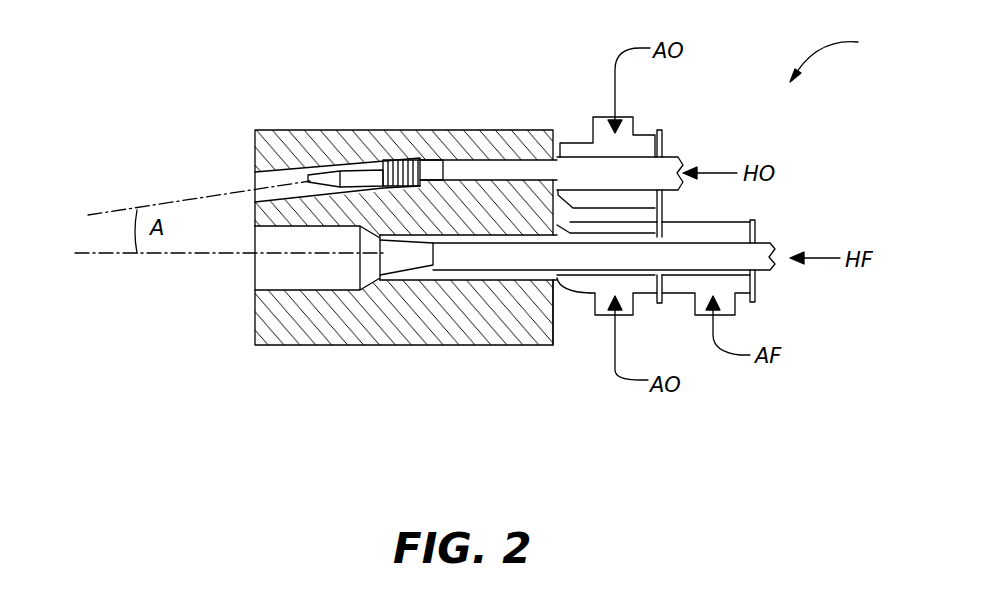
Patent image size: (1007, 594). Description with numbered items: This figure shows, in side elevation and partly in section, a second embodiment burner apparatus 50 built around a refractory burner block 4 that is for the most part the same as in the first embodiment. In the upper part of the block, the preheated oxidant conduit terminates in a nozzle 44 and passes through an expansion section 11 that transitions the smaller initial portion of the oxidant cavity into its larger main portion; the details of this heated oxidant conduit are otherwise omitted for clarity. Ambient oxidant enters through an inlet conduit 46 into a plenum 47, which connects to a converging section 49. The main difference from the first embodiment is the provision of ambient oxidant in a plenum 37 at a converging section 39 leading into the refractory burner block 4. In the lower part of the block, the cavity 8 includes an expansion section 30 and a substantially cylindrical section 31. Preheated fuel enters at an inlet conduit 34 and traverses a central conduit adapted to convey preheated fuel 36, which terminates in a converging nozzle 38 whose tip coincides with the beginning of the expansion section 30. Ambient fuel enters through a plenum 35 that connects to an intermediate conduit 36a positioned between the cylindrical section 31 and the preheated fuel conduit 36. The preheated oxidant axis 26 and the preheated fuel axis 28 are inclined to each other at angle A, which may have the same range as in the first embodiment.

The refractory burner block 4 is at (273, 130).
The cavity 8 is at (288, 285).
The expansion section 11 is at (458, 157).
The preheated oxidant axis 26 is at (88, 215).
The preheated fuel axis 28 is at (90, 253).
The expansion section 30 is at (373, 285).
The substantially cylindrical section 31 is at (517, 285).
The inlet conduit 34 is at (767, 243).
The plenum 35 is at (765, 218).
The conduit adapted to convey preheated fuel 36 is at (455, 268).
The intermediate conduit 36a is at (496, 275).
The plenum 37 is at (580, 295).
The nozzle 38 is at (412, 260).
The converging section 39 is at (560, 295).
The nozzle 44 is at (326, 171).
The inlet conduit 46 is at (592, 128).
The plenum 47 is at (652, 133).
The converging section 49 is at (563, 137).
The burner apparatus 50 is at (842, 56).